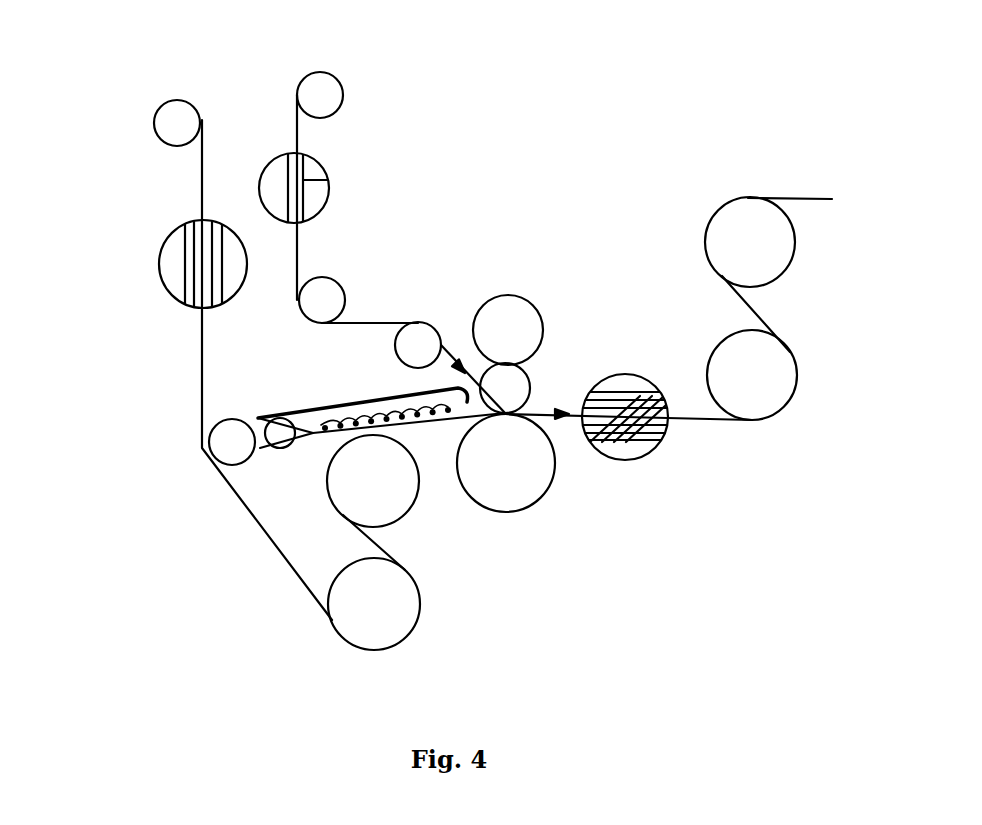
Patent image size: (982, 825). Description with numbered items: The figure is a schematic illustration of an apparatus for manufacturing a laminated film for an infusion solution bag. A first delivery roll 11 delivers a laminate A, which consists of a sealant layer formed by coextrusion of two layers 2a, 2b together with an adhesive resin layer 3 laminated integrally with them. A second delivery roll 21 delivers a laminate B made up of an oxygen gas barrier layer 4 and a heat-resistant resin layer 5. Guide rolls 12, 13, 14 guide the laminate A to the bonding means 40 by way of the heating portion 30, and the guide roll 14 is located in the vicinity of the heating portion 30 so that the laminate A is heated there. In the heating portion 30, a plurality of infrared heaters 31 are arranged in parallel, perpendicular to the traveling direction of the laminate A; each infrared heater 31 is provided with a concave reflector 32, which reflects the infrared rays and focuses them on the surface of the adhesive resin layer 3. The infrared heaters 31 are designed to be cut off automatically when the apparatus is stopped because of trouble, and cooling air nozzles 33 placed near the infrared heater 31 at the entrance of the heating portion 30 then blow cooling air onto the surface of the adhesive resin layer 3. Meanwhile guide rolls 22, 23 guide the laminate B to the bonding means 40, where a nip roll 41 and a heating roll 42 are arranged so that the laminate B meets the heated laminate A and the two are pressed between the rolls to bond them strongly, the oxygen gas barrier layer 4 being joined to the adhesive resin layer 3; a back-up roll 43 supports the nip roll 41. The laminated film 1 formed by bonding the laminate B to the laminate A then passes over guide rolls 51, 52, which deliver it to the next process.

The laminated film 1 is at (688, 414).
The sealant layer (first coextruded layer) 2a is at (192, 232).
The sealant layer (second coextruded layer) 2b is at (198, 250).
The adhesive resin layer 3 is at (210, 277).
The oxygen gas barrier layer 4 is at (305, 160).
The heat-resistant resin layer 5 is at (327, 180).
The first delivery roll 11 is at (165, 104).
The guide roll 12 is at (222, 436).
The guide roll 13 is at (392, 650).
The guide roll 14 is at (398, 512).
The second delivery roll 21 is at (334, 77).
The guide roll 22 is at (340, 281).
The guide roll 23 is at (420, 322).
The heating portion 30 is at (345, 429).
The infrared heater 31 is at (325, 432).
The concave reflector 32 is at (347, 406).
The cooling air nozzle 33 is at (279, 449).
The bonding means 40 is at (525, 397).
The nip roll 41 is at (530, 380).
The heating roll 42 is at (530, 505).
The back-up roll 43 is at (508, 295).
The guide roll 51 is at (792, 393).
The guide roll 52 is at (748, 198).
The laminate A is at (198, 177).
The laminate B is at (378, 170).